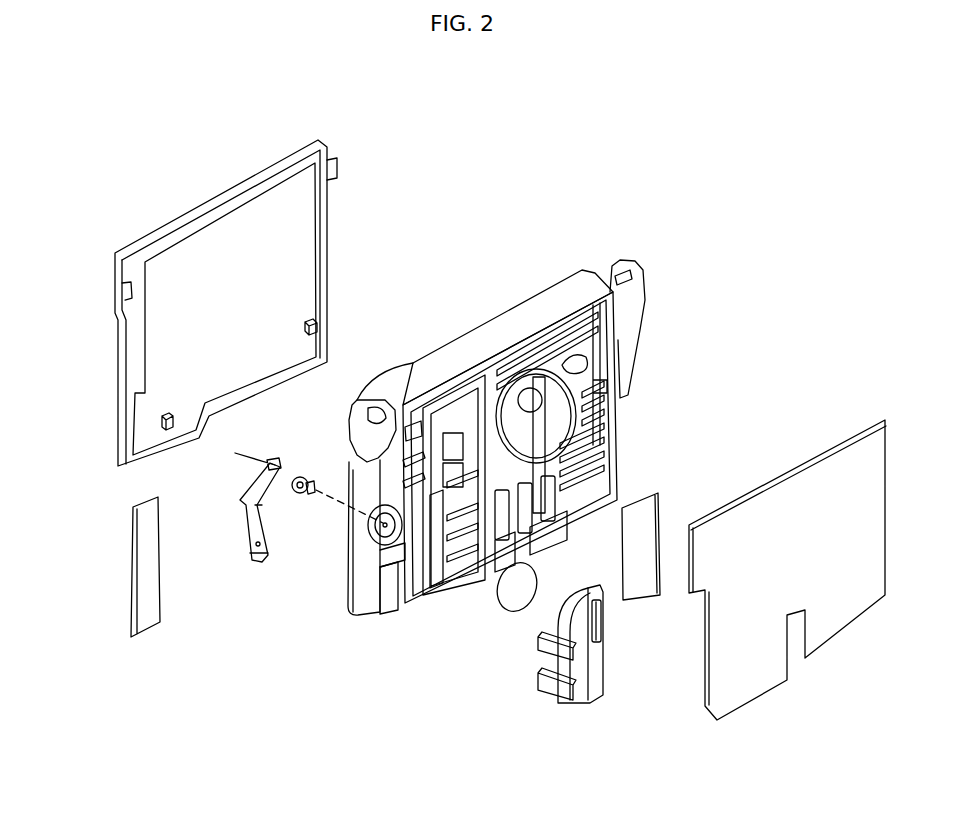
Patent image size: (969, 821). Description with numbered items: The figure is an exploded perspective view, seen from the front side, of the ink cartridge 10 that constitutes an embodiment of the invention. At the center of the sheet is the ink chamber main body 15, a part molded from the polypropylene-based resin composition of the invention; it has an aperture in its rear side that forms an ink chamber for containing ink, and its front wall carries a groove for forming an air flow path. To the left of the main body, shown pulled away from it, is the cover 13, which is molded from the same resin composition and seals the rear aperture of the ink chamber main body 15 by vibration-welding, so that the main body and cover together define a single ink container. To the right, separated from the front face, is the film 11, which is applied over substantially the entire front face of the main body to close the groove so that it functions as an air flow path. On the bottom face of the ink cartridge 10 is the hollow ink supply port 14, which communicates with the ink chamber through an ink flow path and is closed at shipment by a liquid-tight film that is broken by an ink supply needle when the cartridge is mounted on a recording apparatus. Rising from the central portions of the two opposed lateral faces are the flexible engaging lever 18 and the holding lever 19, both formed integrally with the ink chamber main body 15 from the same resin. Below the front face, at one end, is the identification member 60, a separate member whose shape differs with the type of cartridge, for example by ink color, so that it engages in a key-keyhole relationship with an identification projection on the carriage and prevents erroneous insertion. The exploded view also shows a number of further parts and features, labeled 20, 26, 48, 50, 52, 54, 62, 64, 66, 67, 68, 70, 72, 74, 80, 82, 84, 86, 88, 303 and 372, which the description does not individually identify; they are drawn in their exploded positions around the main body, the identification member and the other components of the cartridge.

The ink cartridge 10 is at (888, 736).
The film 11 is at (738, 685).
The cover 13 is at (170, 220).
The ink supply port 14 is at (567, 535).
The ink chamber main body 15 is at (512, 441).
The engaging lever 18 is at (645, 302).
The holding lever 19 is at (357, 440).
The side housing 20 is at (349, 600).
The lower tab 26 is at (386, 612).
The left compartment 48 is at (437, 415).
The filter plate 50 is at (655, 493).
The guide rail 52 is at (437, 582).
The upper vent slot 54 is at (497, 398).
The identification member 60 is at (555, 660).
The connector body 62 is at (610, 610).
The connector slot 64 is at (593, 672).
The upper terminal tab 66 is at (538, 688).
The lower terminal tab 67 is at (505, 674).
The disc member 68 is at (537, 582).
The pivot assembly 70 is at (282, 432).
The washer 72 is at (300, 477).
The pin 74 is at (313, 484).
The spring assembly 80 is at (205, 462).
The spring foot 82 is at (254, 558).
The spring arm 84 is at (256, 544).
The spring rod 86 is at (262, 466).
The side plate 88 is at (133, 517).
The circular opening 303 is at (560, 405).
The rectangular openings 372 is at (457, 440).